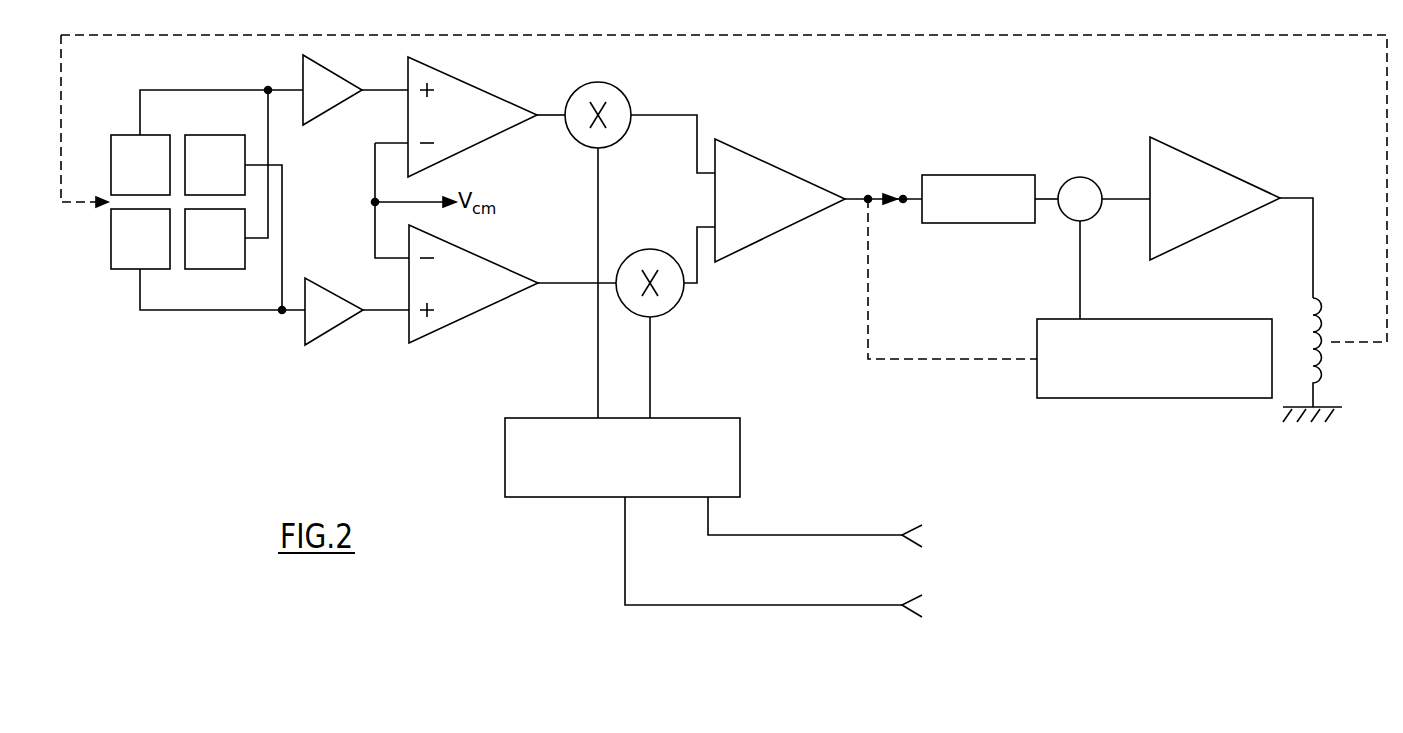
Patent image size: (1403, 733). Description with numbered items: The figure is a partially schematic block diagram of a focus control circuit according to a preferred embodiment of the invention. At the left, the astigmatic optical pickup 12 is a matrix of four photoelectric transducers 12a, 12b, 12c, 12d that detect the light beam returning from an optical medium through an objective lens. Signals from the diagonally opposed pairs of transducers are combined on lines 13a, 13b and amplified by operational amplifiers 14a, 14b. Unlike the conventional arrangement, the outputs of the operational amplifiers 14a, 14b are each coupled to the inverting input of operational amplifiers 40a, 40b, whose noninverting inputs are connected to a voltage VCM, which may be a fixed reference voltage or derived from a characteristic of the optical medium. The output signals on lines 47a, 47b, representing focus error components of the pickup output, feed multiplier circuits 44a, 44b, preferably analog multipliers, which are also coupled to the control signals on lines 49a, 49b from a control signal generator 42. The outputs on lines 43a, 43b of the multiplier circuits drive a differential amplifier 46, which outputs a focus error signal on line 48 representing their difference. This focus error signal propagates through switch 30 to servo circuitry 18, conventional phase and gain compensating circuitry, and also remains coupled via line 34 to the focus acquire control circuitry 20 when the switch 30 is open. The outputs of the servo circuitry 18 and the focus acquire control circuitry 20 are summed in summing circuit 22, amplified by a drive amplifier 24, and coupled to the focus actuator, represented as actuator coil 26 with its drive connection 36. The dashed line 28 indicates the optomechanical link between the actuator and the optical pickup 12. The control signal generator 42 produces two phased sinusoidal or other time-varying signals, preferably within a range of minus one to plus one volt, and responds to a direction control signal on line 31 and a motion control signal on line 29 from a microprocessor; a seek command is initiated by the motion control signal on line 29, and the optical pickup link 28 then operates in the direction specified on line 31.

The optical pickup 12 is at (170, 225).
The photoelectric transducer 12a is at (130, 143).
The photoelectric transducer 12b is at (228, 140).
The photoelectric transducer 12c is at (135, 263).
The photoelectric transducer 12d is at (202, 260).
The line 13a is at (279, 88).
The line 13b is at (297, 312).
The operational amplifier 14a is at (320, 77).
The operational amplifier 14b is at (322, 293).
The operational amplifier 40a is at (493, 137).
The operational amplifier 40b is at (502, 303).
The line 47a is at (552, 112).
The line 47b is at (582, 278).
The multiplier circuit 44a is at (628, 100).
The multiplier circuit 44b is at (683, 300).
The line 43a is at (672, 122).
The line 43b is at (693, 247).
The differential amplifier 46 is at (745, 172).
The line 48 is at (850, 203).
The switch 30 is at (868, 196).
The servo circuitry 18 is at (1000, 224).
The summing circuit 22 is at (1075, 177).
The drive amplifier 24 is at (1195, 172).
The actuator drive line 36 is at (1313, 240).
The actuator coil 26 is at (1325, 364).
The focus acquire control circuitry 20 is at (1072, 398).
The line 34 is at (898, 362).
The optomechanical link 28 is at (1237, 36).
The line 49a is at (597, 393).
The line 49b is at (653, 385).
The control signal generator 42 is at (540, 500).
The line 31 is at (767, 535).
The line 29 is at (713, 606).